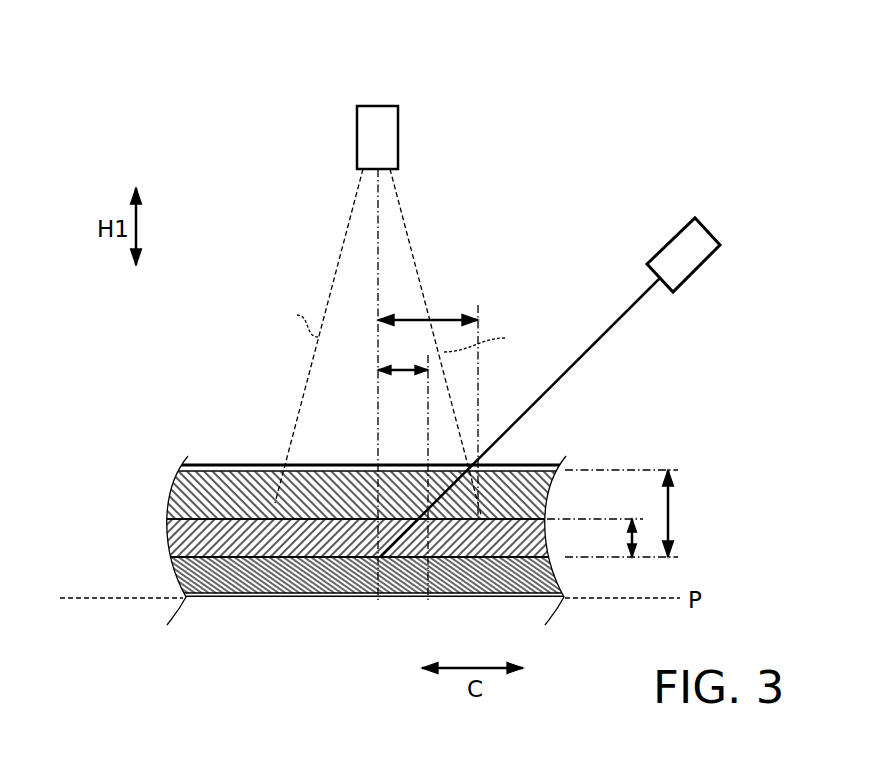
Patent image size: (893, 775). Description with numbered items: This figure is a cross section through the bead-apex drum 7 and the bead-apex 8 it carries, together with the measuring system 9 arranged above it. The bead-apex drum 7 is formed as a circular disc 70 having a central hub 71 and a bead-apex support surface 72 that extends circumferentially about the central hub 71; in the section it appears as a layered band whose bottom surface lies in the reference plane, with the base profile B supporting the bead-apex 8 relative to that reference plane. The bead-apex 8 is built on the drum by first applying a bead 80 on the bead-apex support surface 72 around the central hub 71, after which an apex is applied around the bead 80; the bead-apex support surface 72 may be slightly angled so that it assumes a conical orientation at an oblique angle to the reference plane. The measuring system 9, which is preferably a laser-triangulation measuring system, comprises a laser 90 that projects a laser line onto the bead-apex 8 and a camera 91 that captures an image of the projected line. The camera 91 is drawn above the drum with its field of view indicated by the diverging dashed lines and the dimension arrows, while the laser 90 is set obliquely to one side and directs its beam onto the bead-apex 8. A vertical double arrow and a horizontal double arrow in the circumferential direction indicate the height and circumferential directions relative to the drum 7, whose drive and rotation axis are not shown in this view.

The measuring system 9 is at (333, 93).
The camera 91 is at (392, 143).
The laser 90 is at (676, 252).
The bead-apex drum 7 is at (147, 438).
The central hub 71 is at (235, 464).
The bead-apex support surface 72 is at (348, 596).
The bead-apex 8 is at (177, 503).
The bead 80 is at (178, 550).
The circular disc 70 is at (270, 583).
The base profile B is at (222, 560).